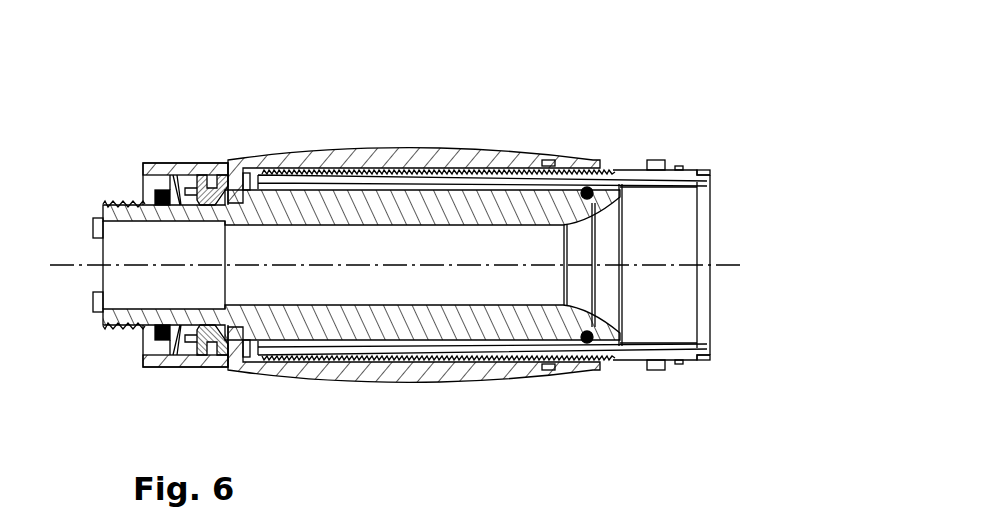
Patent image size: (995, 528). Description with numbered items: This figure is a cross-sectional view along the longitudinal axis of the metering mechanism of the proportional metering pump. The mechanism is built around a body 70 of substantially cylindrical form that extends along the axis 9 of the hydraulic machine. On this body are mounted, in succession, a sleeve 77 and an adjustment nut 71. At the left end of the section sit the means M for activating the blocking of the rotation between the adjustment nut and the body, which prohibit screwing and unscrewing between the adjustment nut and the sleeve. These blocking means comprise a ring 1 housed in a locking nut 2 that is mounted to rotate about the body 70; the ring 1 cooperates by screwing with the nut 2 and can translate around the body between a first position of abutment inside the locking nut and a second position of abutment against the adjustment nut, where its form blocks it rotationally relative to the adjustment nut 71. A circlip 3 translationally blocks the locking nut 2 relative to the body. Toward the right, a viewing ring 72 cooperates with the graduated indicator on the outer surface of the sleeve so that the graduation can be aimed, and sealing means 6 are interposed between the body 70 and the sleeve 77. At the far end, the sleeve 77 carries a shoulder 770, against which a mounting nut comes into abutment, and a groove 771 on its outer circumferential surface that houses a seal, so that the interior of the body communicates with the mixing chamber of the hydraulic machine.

The ring 1 is at (205, 178).
The locking nut 2 is at (178, 175).
The circlip 3 is at (155, 197).
The sealing means 6 is at (587, 335).
The axis 9 is at (78, 263).
The body 70 is at (123, 328).
The adjustment nut 71 is at (407, 160).
The viewing ring 72 is at (564, 165).
The sleeve 77 is at (660, 160).
The shoulder 770 is at (657, 372).
The groove 771 is at (690, 356).
The means for activating the blocking of the rotation M is at (230, 88).